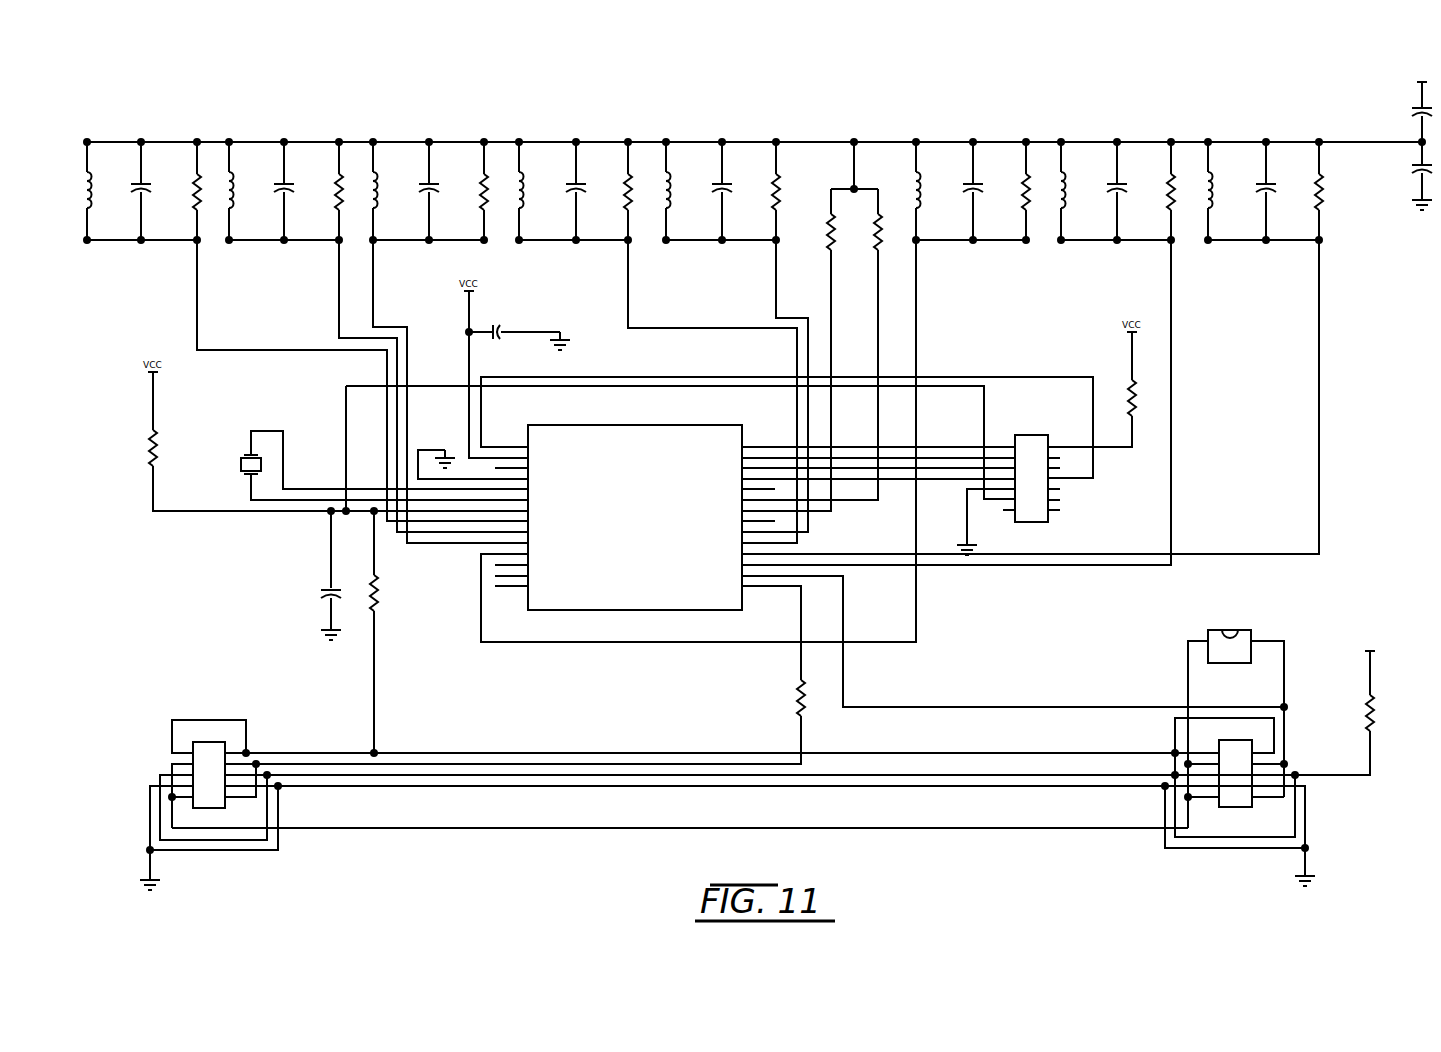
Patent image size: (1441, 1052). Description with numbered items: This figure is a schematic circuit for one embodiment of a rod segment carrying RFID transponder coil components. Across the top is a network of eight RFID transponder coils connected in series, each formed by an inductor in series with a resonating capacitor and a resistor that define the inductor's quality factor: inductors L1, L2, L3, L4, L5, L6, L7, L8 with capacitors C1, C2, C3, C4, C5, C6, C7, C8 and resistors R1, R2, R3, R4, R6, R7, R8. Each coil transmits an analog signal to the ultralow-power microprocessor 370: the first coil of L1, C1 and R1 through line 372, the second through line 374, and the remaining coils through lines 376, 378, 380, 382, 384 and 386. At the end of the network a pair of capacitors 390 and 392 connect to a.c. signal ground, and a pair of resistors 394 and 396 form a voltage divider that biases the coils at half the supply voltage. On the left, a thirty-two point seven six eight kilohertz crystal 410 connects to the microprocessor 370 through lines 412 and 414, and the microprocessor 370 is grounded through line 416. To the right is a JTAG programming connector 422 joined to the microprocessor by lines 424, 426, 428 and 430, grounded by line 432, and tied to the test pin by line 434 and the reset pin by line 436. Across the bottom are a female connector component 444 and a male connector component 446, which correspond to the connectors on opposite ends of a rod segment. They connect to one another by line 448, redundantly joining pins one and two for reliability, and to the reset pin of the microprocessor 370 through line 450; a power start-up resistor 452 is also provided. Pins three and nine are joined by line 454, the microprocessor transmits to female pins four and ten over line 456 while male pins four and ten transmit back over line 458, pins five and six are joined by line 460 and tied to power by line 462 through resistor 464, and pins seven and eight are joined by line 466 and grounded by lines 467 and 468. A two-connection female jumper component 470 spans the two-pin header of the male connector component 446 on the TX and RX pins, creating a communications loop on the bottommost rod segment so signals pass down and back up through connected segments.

The ultralow-power microprocessor 370 is at (658, 425).
The line 372 is at (197, 300).
The line 374 is at (339, 324).
The line 376 is at (373, 274).
The line 378 is at (660, 328).
The line 380 is at (776, 264).
The line 382 is at (916, 274).
The line 384 is at (1171, 320).
The line 386 is at (1319, 314).
The capacitor 390 is at (1412, 110).
The capacitor 392 is at (1414, 182).
The resistor 394 is at (826, 232).
The resistor 396 is at (881, 232).
The crystal 410 is at (246, 456).
The line 412 is at (262, 431).
The line 414 is at (251, 496).
The line 416 is at (462, 458).
The JTAG programming connector 422 is at (1026, 435).
The line 424 is at (935, 458).
The line 426 is at (920, 445).
The line 428 is at (945, 478).
The line 430 is at (900, 478).
The line 432 is at (970, 525).
The line 434 is at (1035, 377).
The line 436 is at (940, 386).
The female connector component 444 is at (208, 742).
The male connector component 446 is at (1233, 807).
The line 448 is at (515, 753).
The line 450 is at (374, 706).
The power start up resistor 452 is at (376, 582).
The line 454 is at (462, 828).
The line 456 is at (643, 764).
The line 458 is at (940, 707).
The line 460 is at (908, 776).
The line 462 is at (1366, 754).
The resistor 464 is at (1366, 702).
The line 466 is at (1040, 786).
The line 467 is at (152, 866).
The line 468 is at (1308, 853).
The two connection female jumper component 470 is at (1230, 630).
The inductor L1 is at (90, 199).
The inductor L2 is at (232, 199).
The inductor L3 is at (376, 199).
The inductor L4 is at (522, 199).
The inductor L5 is at (669, 199).
The inductor L6 is at (919, 199).
The inductor L7 is at (1064, 199).
The inductor L8 is at (1211, 199).
The capacitor C1 is at (148, 188).
The capacitor C2 is at (291, 188).
The capacitor C3 is at (436, 188).
The capacitor C4 is at (583, 188).
The capacitor C5 is at (729, 188).
The capacitor C6 is at (980, 188).
The capacitor C7 is at (1124, 188).
The capacitor C8 is at (1273, 188).
The resistor R1 is at (191, 176).
The resistor R2 is at (333, 176).
The resistor R3 is at (478, 176).
The resistor R4 is at (622, 176).
The resistor R6 is at (1020, 176).
The resistor R7 is at (1165, 176).
The resistor R8 is at (1313, 176).